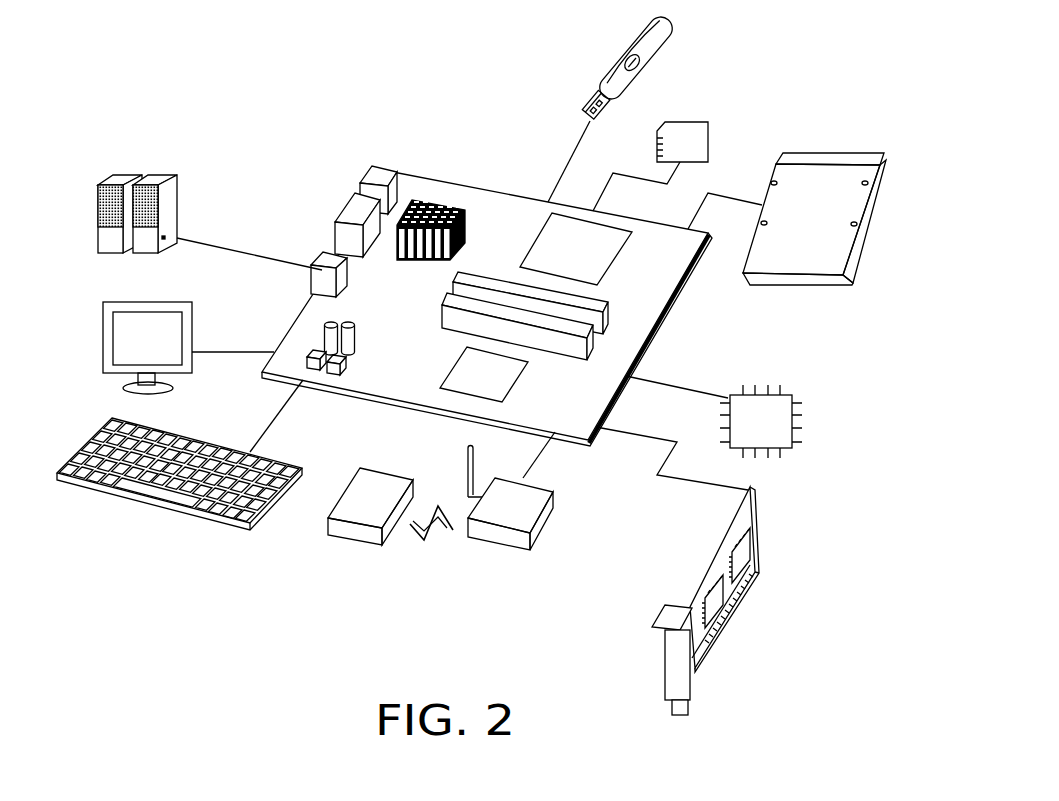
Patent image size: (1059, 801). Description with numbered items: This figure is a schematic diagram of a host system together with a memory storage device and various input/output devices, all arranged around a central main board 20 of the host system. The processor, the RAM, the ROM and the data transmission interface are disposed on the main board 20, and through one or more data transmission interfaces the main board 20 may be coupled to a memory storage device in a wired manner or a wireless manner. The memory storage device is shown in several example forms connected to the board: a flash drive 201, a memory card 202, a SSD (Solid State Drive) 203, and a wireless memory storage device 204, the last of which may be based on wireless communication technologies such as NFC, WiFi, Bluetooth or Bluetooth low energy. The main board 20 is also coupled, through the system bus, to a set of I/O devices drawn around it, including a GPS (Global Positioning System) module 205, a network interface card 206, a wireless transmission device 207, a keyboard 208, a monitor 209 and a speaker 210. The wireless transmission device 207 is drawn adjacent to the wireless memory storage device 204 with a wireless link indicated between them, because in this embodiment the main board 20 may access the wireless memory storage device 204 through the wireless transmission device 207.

The main board 20 is at (487, 210).
The flash drive 201 is at (608, 61).
The memory card 202 is at (714, 129).
The SSD (Solid State Drive) 203 is at (833, 153).
The wireless memory storage device 204 is at (343, 484).
The GPS (Global Positioning System) module 205 is at (793, 420).
The network interface card 206 is at (757, 543).
The wireless transmission device 207 is at (543, 530).
The keyboard 208 is at (184, 512).
The monitor 209 is at (102, 355).
The speaker 210 is at (97, 241).